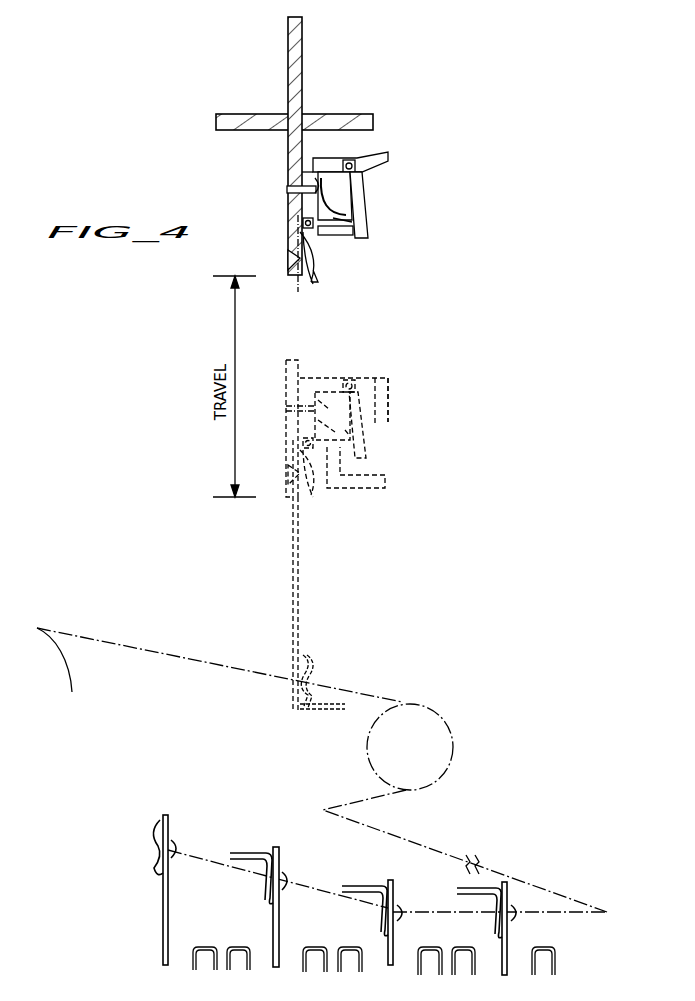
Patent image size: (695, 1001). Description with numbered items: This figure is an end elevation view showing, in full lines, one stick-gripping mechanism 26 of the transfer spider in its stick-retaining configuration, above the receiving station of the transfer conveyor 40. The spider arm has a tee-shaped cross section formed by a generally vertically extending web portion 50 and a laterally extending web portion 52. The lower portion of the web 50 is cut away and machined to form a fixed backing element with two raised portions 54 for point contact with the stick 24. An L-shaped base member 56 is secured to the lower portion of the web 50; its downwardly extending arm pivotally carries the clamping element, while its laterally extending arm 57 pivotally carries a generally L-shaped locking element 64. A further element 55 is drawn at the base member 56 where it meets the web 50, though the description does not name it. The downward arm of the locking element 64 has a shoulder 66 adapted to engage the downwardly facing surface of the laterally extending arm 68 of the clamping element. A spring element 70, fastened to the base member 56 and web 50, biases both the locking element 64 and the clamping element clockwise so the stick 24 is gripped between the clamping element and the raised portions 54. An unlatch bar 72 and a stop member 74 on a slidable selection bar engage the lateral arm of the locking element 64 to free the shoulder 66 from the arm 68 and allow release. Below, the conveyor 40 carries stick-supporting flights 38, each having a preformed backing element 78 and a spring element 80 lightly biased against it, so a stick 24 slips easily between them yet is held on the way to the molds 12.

The molds 12 is at (325, 947).
The stick 24 is at (300, 288).
The stick-gripping mechanism 26 is at (374, 262).
The stick-supporting flight 38 is at (328, 645).
The transfer conveyor 40 is at (234, 666).
The vertically extending web portion 50 is at (288, 76).
The laterally extending web portion 52 is at (240, 112).
The raised portions 54 is at (294, 266).
The pin 55 is at (287, 190).
The L-shaped base member 56 is at (312, 170).
The laterally extending arm of the base member 57 is at (336, 162).
The locking element 64 is at (370, 230).
The shoulder 66 is at (366, 224).
The laterally extending arm of the clamping element 68 is at (338, 333).
The spring element 70 is at (345, 380).
The unlatch bar 72 is at (375, 493).
The stop member 74 is at (392, 411).
The preformed backing element 78 is at (315, 711).
The spring element 80 is at (291, 672).